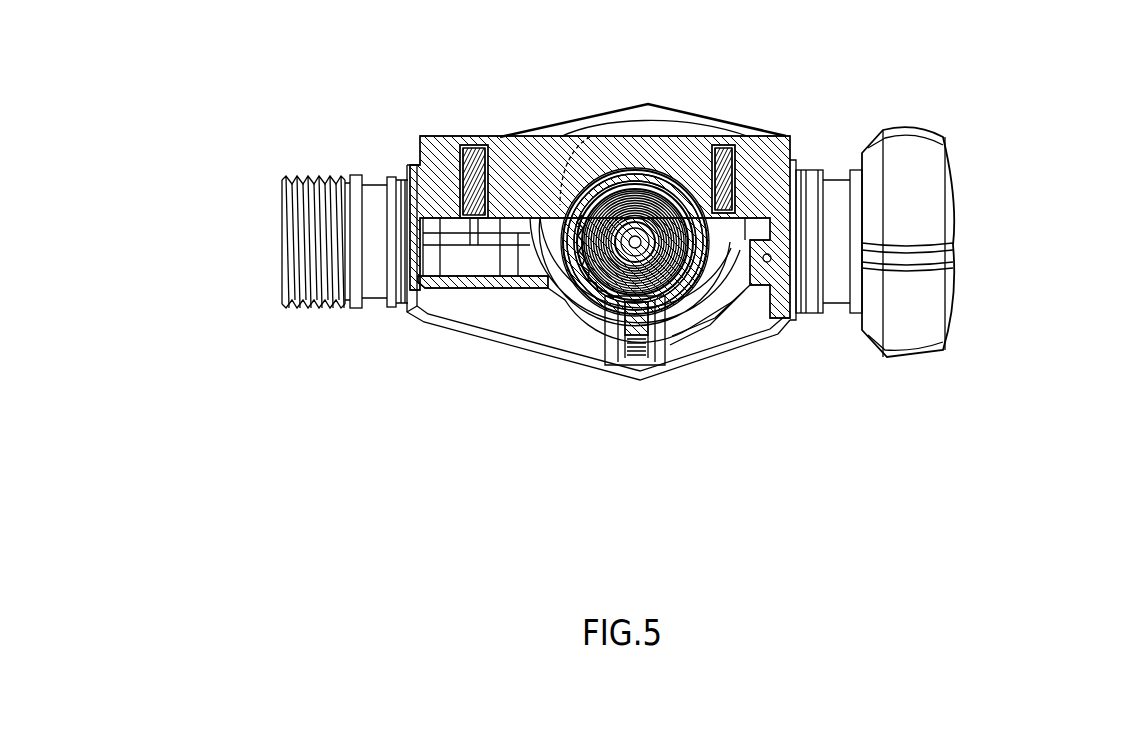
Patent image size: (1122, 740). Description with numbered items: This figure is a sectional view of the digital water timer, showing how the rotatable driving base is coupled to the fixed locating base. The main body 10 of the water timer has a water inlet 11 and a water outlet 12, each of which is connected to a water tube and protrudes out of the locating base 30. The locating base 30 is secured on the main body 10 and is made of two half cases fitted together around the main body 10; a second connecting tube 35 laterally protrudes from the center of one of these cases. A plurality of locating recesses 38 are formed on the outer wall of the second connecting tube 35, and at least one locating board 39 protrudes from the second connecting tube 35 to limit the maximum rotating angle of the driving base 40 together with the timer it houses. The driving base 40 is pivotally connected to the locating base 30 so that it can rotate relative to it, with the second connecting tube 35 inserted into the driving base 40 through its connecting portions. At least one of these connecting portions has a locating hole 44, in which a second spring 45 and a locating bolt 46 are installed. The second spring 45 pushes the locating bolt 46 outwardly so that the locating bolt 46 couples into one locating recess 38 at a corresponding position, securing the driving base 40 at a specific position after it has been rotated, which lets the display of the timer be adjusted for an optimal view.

The main body 10 is at (805, 168).
The water inlet 11 is at (956, 238).
The water outlet 12 is at (282, 245).
The locating base 30 is at (440, 333).
The second connecting tube 35 is at (725, 145).
The locating recesses 38 is at (620, 243).
The locating board 39 is at (590, 137).
The driving base 40 is at (496, 135).
The locating hole 44 is at (600, 368).
The second spring 45 is at (643, 379).
The locating bolt 46 is at (690, 363).